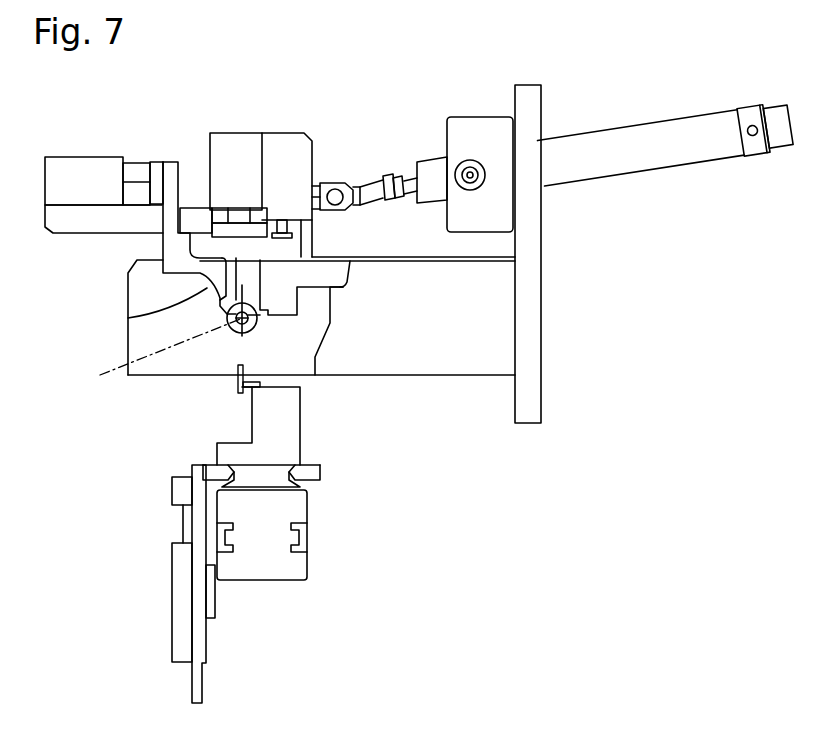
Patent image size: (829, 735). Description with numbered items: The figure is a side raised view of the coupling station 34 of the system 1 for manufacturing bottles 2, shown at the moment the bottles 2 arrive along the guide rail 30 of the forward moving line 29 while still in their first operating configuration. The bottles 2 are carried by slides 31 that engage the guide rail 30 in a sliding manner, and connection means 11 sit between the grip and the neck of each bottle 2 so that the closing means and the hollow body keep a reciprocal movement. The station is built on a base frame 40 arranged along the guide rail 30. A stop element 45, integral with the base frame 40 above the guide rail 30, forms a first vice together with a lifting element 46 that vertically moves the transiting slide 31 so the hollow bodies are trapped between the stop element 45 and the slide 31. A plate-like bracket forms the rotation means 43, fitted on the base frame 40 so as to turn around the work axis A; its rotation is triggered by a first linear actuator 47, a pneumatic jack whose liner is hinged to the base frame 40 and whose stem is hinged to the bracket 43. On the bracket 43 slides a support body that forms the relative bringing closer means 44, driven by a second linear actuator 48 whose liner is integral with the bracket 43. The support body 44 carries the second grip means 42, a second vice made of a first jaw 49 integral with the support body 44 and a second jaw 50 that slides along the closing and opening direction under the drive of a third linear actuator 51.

The system 1 is at (650, 255).
The bottles 2 is at (277, 387).
The connection means 11 is at (357, 307).
The forward moving line 29 is at (250, 606).
The guide rail 30 is at (267, 563).
The slides 31 is at (283, 435).
The coupling station 34 is at (480, 95).
The base frame 40 is at (528, 333).
The second grip means 42 is at (160, 287).
The rotation means 43 is at (305, 160).
The relative bringing closer means 44 is at (78, 225).
The stop element 45 is at (322, 322).
The lifting element 46 is at (198, 523).
The first linear actuator 47 is at (603, 145).
The second linear actuator 48 is at (233, 148).
The first jaw 49 is at (250, 289).
The second jaw 50 is at (213, 326).
The third linear actuator 51 is at (75, 173).
The work axis A is at (163, 355).